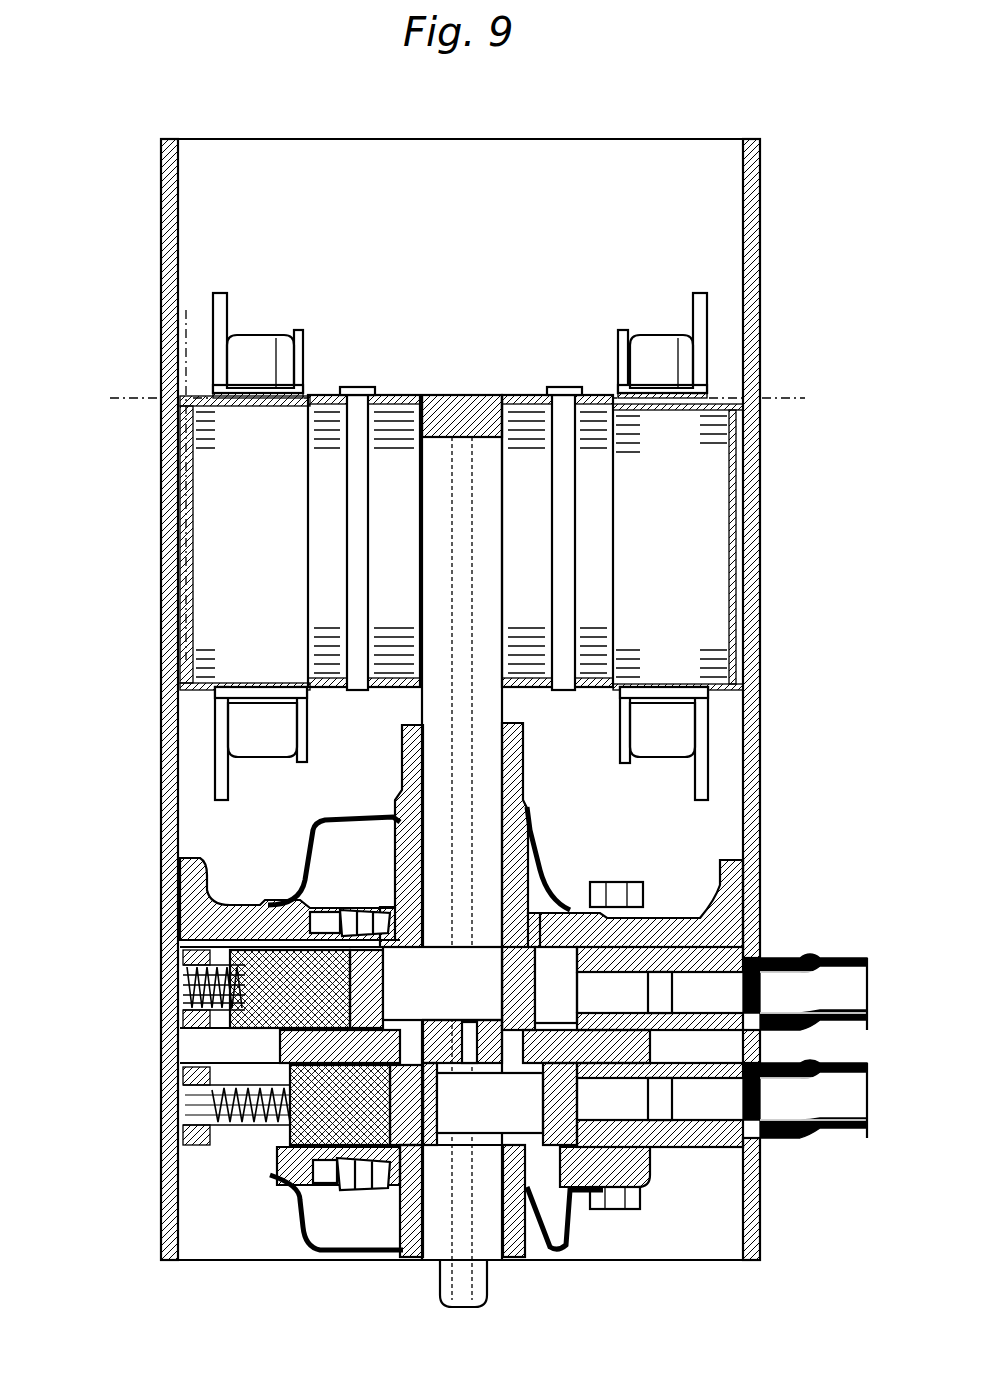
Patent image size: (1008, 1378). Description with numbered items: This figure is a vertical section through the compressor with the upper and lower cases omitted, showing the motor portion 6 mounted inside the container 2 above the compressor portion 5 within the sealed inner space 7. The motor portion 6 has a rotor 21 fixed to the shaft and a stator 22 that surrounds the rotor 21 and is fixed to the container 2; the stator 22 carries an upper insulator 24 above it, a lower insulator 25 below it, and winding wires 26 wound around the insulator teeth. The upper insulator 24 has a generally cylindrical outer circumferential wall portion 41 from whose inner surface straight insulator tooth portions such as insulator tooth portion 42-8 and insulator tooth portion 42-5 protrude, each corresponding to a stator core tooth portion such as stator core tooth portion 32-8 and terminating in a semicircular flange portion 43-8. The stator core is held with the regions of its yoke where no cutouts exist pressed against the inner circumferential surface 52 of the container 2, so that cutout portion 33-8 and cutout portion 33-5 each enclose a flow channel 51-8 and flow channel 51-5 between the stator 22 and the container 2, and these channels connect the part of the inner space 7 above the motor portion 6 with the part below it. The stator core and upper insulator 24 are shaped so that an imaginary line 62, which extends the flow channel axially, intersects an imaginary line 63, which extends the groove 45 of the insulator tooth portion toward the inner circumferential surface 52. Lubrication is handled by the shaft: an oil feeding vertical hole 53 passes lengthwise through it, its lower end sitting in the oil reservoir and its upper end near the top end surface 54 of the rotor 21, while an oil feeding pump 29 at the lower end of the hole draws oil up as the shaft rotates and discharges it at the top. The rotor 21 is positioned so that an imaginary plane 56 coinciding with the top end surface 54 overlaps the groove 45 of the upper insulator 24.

The container 2 is at (160, 156).
The compressor portion 5 is at (230, 1160).
The motor portion 6 is at (553, 300).
The inner space 7 is at (198, 158).
The rotor 21 is at (503, 400).
The stator 22 is at (624, 316).
The upper insulator 24 is at (220, 327).
The lower insulator 25 is at (221, 752).
The winding wires 26 is at (257, 350).
The oil feeding pump 29 is at (440, 1287).
The stator core tooth portion 32-8 is at (248, 370).
The cutout portion 33-8 is at (188, 548).
The cutout portion 33-5 is at (737, 548).
The outer circumferential wall portion 41 is at (225, 294).
The insulator tooth portion 42-8 is at (275, 386).
The insulator tooth portion 42-5 is at (678, 386).
The flange portion 43-8 is at (300, 328).
The groove 45 is at (348, 388).
The flow channel 51-8 is at (184, 424).
The flow channel 51-5 is at (738, 418).
The inner circumferential surface 52 is at (185, 822).
The oil feeding vertical hole 53 is at (455, 440).
The top end surface 54 is at (410, 395).
The imaginary plane 56 is at (770, 398).
The imaginary line 62 is at (163, 357).
The imaginary line 63 is at (130, 399).